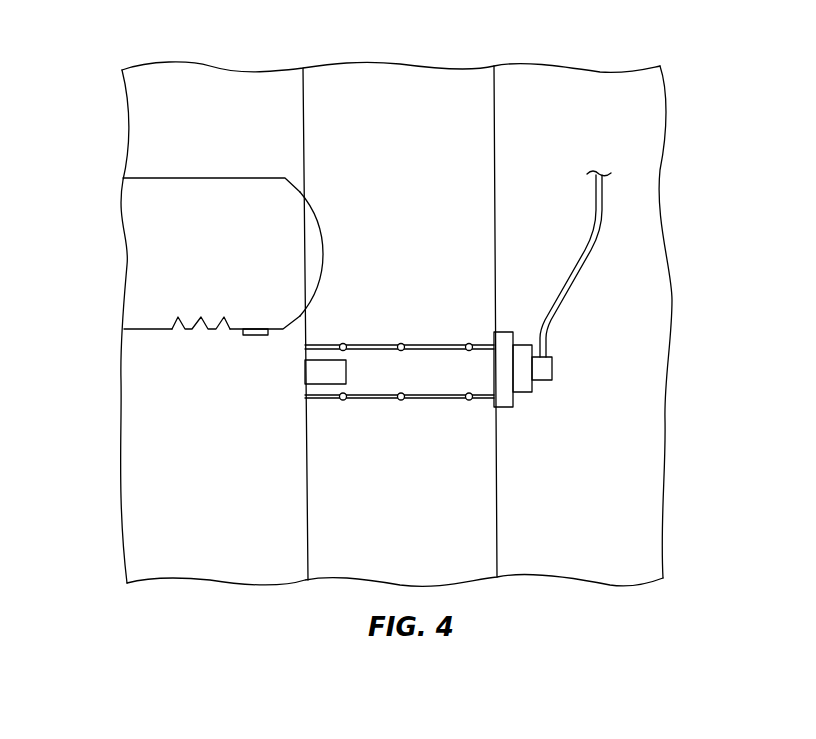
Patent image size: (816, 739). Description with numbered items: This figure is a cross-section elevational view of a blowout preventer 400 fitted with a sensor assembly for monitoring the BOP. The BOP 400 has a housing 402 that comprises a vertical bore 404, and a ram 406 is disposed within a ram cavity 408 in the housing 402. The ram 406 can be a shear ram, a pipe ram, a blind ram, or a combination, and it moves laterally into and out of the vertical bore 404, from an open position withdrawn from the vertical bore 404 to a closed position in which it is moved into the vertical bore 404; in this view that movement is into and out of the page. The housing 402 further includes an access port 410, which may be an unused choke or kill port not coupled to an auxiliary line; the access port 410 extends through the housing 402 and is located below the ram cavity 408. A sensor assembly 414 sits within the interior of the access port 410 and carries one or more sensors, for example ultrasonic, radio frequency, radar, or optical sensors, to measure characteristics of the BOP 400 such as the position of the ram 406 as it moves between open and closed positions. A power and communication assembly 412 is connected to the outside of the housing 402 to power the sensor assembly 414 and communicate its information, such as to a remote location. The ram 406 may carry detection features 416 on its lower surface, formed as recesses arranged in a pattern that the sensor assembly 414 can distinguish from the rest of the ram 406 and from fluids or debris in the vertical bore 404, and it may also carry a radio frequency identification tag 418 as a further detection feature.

The blowout preventer 400 is at (115, 42).
The housing 402 is at (418, 132).
The vertical bore 404 is at (303, 115).
The ram 406 is at (219, 266).
The ram cavity 408 is at (318, 230).
The access port 410 is at (372, 358).
The power and communication assembly 412 is at (549, 390).
The sensor assembly 414 is at (328, 360).
The detection features 416 is at (200, 352).
The radio frequency identification tag 418 is at (255, 337).